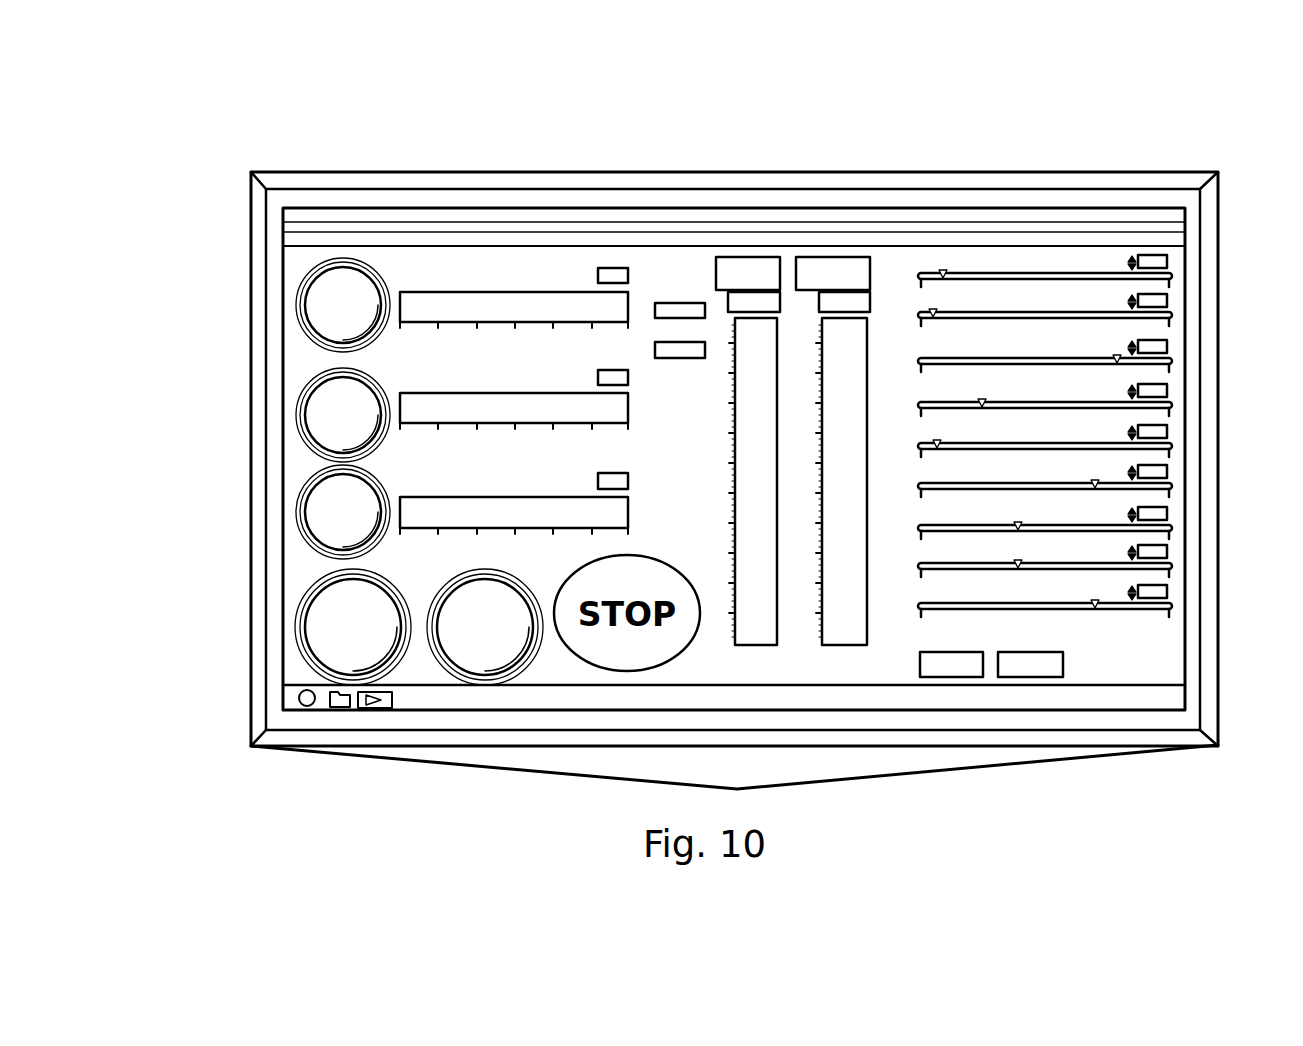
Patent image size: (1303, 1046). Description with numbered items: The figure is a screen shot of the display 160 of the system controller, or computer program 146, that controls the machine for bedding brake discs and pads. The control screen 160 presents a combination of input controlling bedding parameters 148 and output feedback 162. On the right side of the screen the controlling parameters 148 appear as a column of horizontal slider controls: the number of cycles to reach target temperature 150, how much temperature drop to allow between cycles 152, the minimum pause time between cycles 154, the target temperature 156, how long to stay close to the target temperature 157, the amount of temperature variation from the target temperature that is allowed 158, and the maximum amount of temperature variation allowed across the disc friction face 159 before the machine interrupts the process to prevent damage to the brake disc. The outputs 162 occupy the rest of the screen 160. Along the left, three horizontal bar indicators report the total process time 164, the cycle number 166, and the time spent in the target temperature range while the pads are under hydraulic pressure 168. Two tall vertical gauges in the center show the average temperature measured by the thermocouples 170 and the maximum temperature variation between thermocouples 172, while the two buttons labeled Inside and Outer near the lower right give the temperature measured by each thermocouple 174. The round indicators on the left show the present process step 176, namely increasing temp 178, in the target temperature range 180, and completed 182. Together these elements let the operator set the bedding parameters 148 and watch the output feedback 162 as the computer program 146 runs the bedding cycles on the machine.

The computer program 146 is at (477, 102).
The present process step 176 is at (322, 140).
The controlling bedding parameters 148 is at (734, 813).
The output feedback 162 is at (734, 767).
The display 160 is at (978, 178).
The cycle number 166 is at (418, 292).
The time spent in the target temperature range 168 is at (418, 397).
The total process time 164 is at (418, 500).
The increasing temp 178 is at (332, 308).
The in the target temperature range 180 is at (332, 418).
The completed 182 is at (332, 523).
The average temperature 170 is at (767, 268).
The maximum temperature variation between thermocouples 172 is at (865, 270).
The target temperature 156 is at (1160, 300).
The number of cycles to reach target temperature 150 is at (1160, 347).
The time to stay close to target temperature 157 is at (1160, 390).
The temperature drop between cycles 152 is at (1160, 431).
The minimum pause time between cycles 154 is at (1160, 513).
The allowed temperature variation from target temperature 158 is at (1160, 551).
The maximum temperature variation across the disc friction face 159 is at (1160, 591).
The temperature measured by each thermocouple 174 is at (1030, 663).